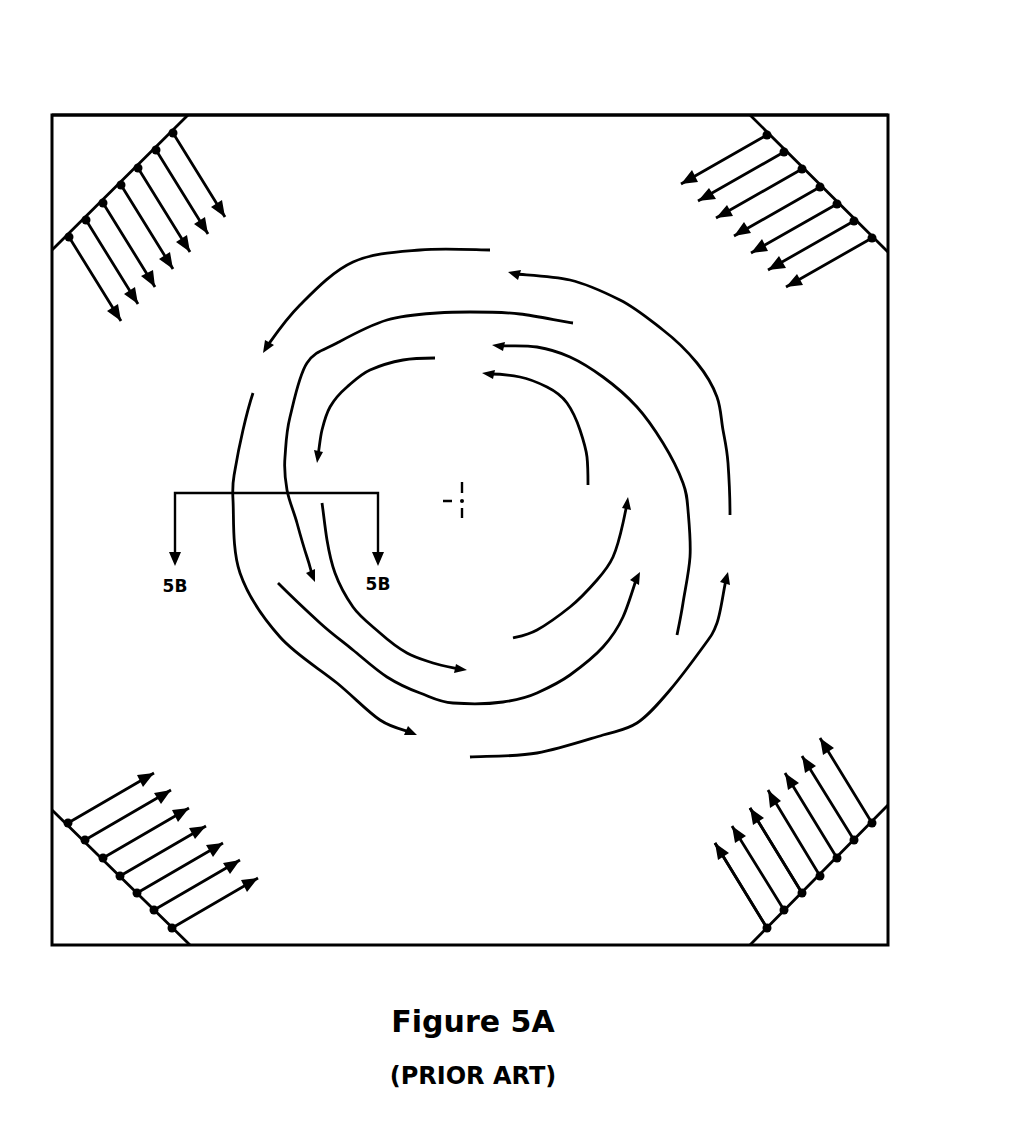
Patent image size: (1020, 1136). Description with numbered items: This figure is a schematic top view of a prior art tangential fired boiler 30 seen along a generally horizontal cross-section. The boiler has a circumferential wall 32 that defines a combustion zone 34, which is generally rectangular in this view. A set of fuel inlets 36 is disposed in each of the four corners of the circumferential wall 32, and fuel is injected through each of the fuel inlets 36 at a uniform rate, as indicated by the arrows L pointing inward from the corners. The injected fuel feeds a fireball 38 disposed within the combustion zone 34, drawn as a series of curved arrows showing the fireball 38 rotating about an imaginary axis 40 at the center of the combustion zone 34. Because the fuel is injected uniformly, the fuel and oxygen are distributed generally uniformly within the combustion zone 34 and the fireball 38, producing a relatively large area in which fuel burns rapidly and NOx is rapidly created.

The tangential fired boiler 30 is at (405, 97).
The circumferential wall 32 is at (643, 115).
The combustion zone 34 is at (481, 853).
The fuel inlets 36 is at (837, 858).
The fireball 38 is at (695, 443).
The imaginary axis 40 is at (470, 501).
The arrows indicating fuel injection L is at (715, 838).